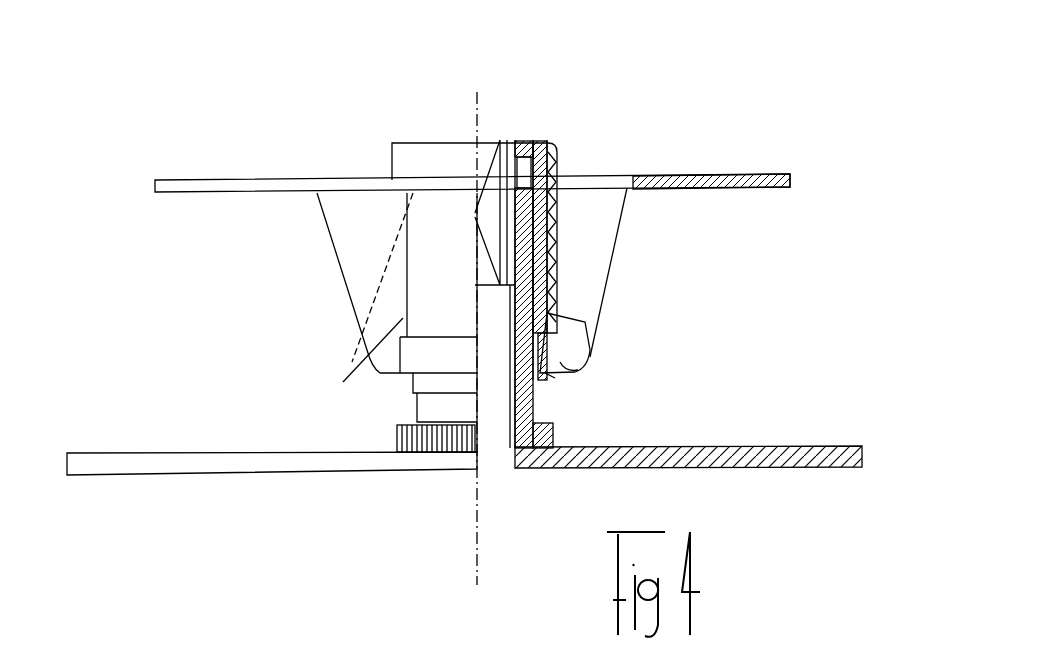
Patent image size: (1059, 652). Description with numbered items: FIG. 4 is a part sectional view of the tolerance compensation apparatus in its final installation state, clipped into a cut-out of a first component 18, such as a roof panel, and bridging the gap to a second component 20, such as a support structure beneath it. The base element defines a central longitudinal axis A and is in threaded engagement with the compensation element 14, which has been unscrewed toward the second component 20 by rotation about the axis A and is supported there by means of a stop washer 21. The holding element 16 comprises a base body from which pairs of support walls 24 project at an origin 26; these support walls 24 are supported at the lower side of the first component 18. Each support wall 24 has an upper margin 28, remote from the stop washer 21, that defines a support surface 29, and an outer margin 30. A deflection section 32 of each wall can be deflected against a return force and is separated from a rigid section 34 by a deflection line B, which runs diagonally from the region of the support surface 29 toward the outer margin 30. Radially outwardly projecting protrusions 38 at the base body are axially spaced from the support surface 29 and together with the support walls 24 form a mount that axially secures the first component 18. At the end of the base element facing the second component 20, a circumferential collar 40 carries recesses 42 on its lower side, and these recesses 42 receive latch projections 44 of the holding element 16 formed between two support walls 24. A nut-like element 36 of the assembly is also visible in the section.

The compensation element 14 is at (408, 406).
The holding element 16 is at (298, 210).
The first component 18 is at (705, 170).
The second component 20 is at (748, 447).
The stop washer 21 is at (397, 436).
The support walls 24 is at (600, 240).
The origin 26 is at (362, 372).
The upper margin 28 is at (368, 193).
The support surface 29 is at (360, 193).
The outer margin 30 is at (335, 273).
The deflection section 32 is at (350, 202).
The rigid section 34 is at (378, 326).
The nut 36 is at (620, 176).
The protrusions 38 is at (399, 158).
The collar 40 is at (560, 350).
The recesses 42 is at (550, 376).
The latch projections 44 is at (560, 368).
The central longitudinal axis A is at (478, 102).
The deflection line B is at (380, 312).